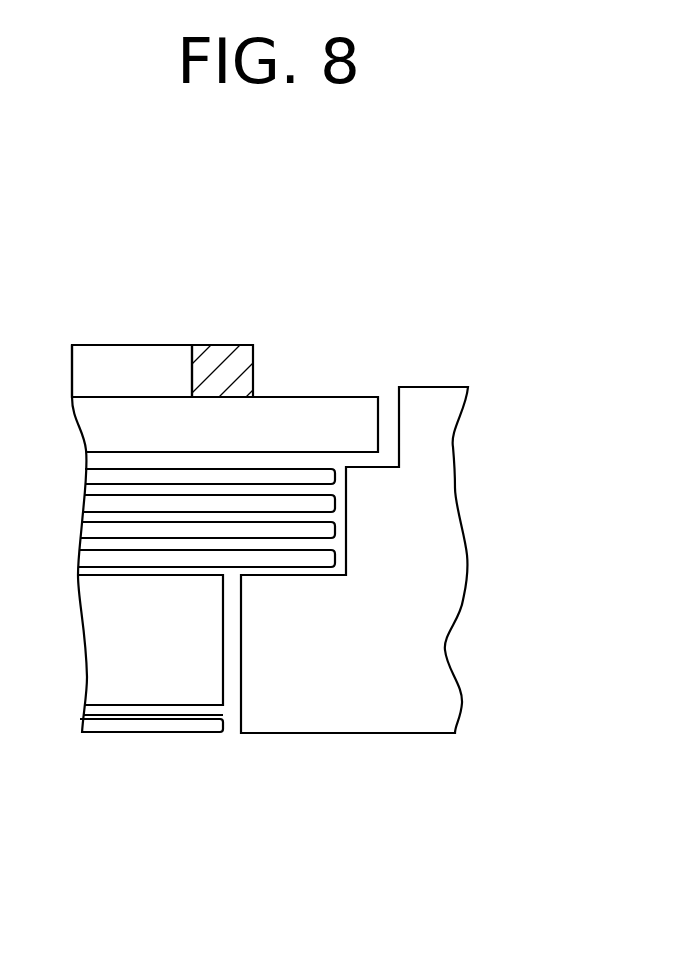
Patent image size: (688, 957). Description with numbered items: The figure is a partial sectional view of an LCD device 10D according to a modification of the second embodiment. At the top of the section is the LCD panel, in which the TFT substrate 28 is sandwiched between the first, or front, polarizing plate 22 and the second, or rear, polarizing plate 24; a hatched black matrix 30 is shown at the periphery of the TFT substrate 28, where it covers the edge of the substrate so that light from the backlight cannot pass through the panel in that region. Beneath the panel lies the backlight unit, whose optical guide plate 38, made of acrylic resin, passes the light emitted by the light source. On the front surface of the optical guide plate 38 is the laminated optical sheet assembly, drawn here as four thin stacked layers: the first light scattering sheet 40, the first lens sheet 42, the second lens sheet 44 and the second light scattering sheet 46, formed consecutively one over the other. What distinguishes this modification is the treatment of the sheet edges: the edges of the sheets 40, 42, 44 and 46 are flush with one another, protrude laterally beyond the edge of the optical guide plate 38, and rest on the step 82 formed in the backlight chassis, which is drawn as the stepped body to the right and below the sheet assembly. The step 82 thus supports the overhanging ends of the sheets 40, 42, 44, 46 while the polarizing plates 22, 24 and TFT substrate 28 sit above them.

The LCD device 10D is at (394, 205).
The first polarizing plate 22 is at (138, 367).
The black matrix 30 is at (220, 360).
The second polarizing plate 24 is at (227, 383).
The TFT substrate 28 is at (323, 420).
The optical guide plate 38 is at (173, 677).
The first light scattering sheet 40 is at (327, 560).
The first lens sheet 42 is at (327, 527).
The second lens sheet 44 is at (327, 505).
The second light scattering sheet 46 is at (327, 480).
The step of the backlight chassis 82 is at (295, 578).